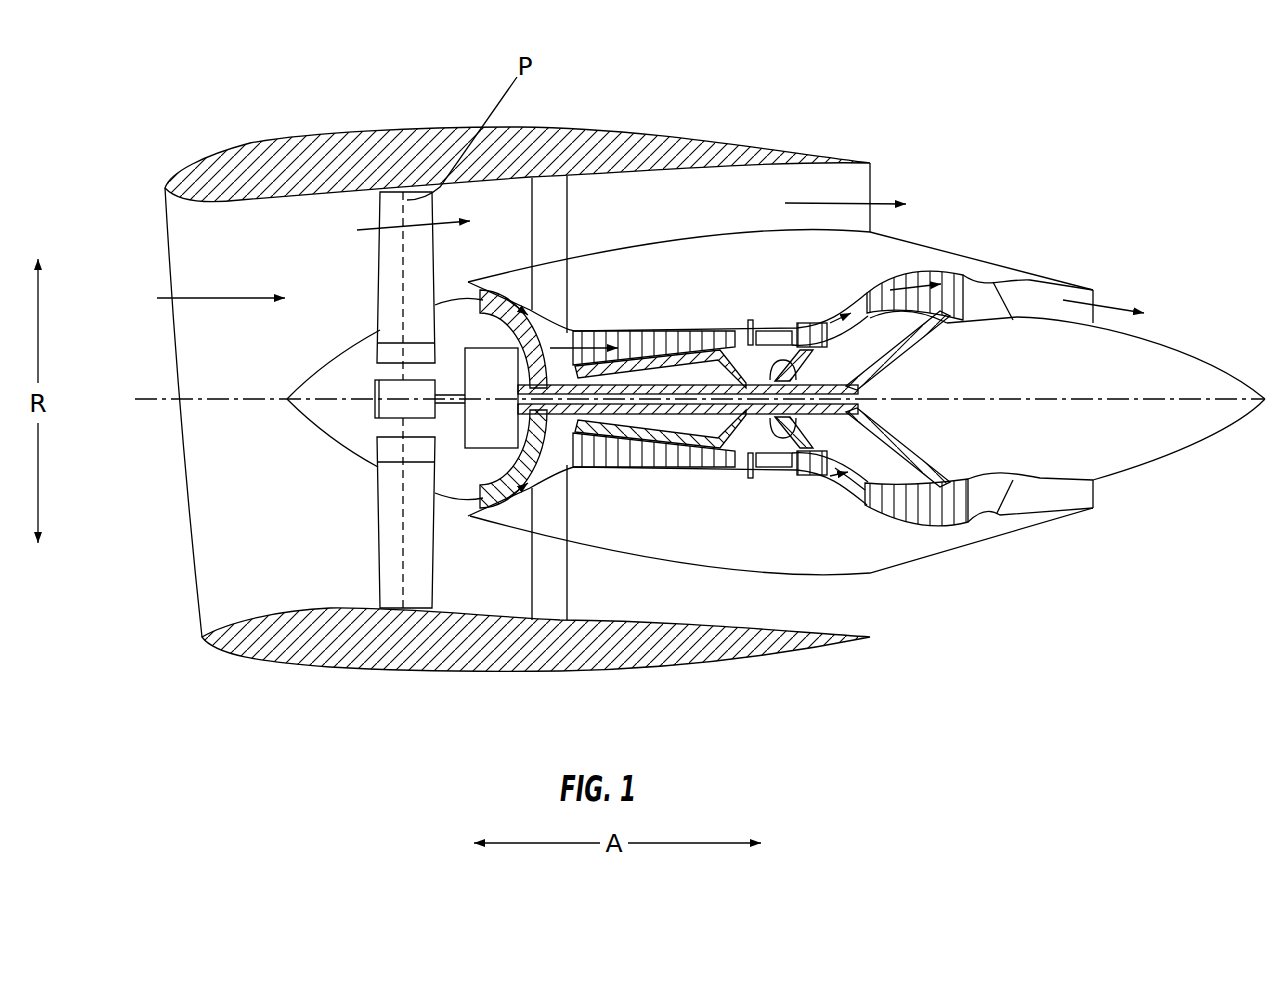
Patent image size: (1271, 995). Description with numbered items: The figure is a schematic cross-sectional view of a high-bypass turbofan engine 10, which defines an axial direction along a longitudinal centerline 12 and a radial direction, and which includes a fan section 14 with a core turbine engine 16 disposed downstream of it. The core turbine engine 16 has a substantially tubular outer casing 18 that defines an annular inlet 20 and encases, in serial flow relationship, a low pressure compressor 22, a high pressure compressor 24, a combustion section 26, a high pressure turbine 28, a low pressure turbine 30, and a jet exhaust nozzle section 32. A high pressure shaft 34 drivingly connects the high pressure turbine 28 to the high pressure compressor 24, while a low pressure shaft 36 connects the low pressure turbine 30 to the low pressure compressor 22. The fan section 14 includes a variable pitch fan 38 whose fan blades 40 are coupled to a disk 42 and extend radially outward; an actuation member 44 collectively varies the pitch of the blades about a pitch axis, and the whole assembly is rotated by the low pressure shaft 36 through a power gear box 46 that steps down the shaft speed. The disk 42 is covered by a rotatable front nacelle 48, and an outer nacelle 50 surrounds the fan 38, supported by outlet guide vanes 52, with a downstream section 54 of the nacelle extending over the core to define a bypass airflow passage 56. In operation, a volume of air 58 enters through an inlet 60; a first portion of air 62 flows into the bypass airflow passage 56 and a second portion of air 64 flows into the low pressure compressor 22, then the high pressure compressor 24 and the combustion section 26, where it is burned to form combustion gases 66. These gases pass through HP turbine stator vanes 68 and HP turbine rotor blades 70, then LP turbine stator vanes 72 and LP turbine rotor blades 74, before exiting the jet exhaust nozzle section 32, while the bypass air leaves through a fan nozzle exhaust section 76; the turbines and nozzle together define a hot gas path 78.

The turbofan engine 10 is at (1014, 136).
The longitudinal centerline 12 is at (1040, 388).
The fan section 14 is at (420, 97).
The core turbine engine 16 is at (740, 289).
The outer casing 18 is at (725, 563).
The annular inlet 20 is at (445, 520).
The low pressure compressor 22 is at (518, 450).
The high pressure compressor 24 is at (598, 464).
The combustion section 26 is at (770, 464).
The high pressure turbine 28 is at (913, 456).
The low pressure turbine 30 is at (952, 526).
The jet exhaust nozzle section 32 is at (1014, 508).
The high pressure shaft 34 is at (800, 364).
The low pressure shaft 36 is at (900, 358).
The variable pitch fan 38 is at (340, 453).
The fan blades 40 is at (375, 555).
The disk 42 is at (397, 353).
The actuation member 44 is at (377, 380).
The power gear box 46 is at (508, 373).
The front nacelle 48 is at (302, 416).
The outer nacelle 50 is at (425, 673).
The outlet guide vanes 52 is at (568, 210).
The downstream section of the nacelle 54 is at (797, 150).
The bypass airflow passage 56 is at (668, 224).
The volume of air 58 is at (218, 296).
The inlet 60 is at (198, 615).
The first portion of air 62 is at (377, 216).
The second portion of air 64 is at (462, 293).
The combustion gases 66 is at (810, 322).
The HP turbine stator vanes 68 is at (795, 467).
The HP turbine rotor blades 70 is at (885, 428).
The LP turbine stator vanes 72 is at (876, 515).
The LP turbine rotor blades 74 is at (888, 520).
The fan nozzle exhaust section 76 is at (860, 185).
The hot gas path 78 is at (861, 297).